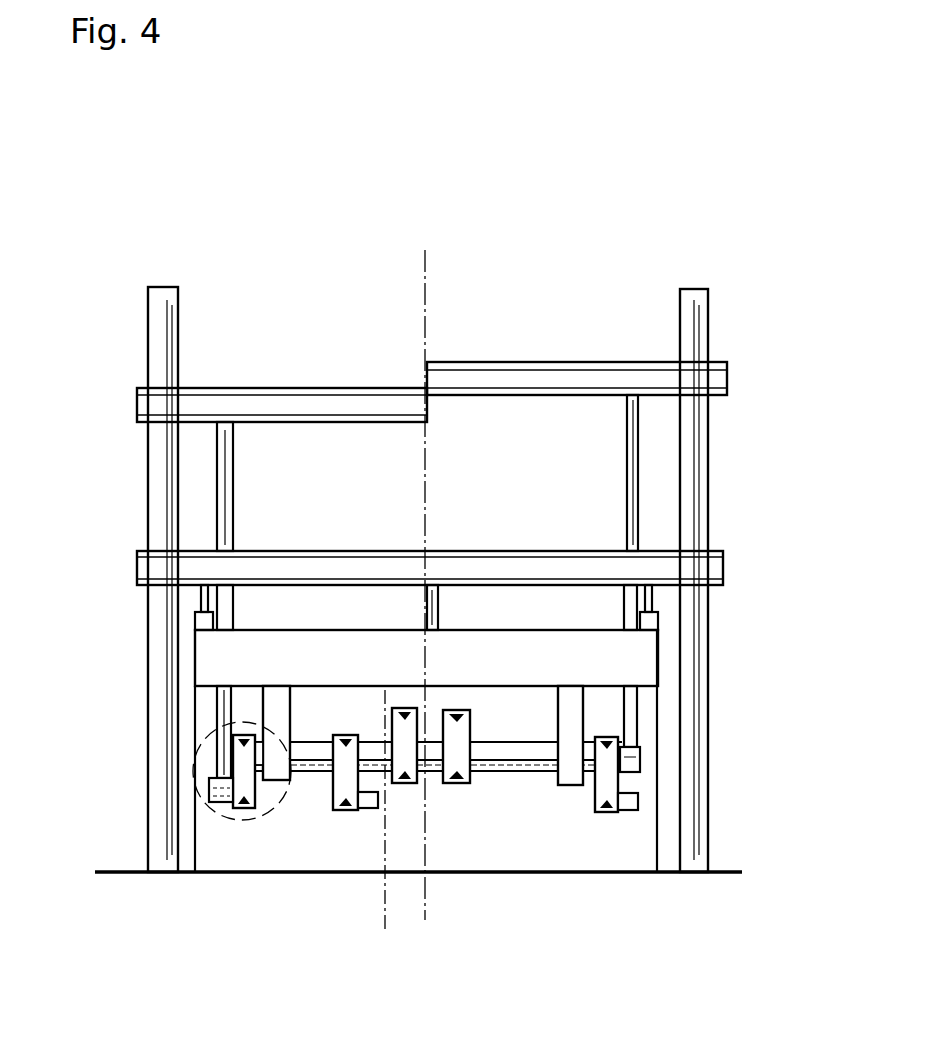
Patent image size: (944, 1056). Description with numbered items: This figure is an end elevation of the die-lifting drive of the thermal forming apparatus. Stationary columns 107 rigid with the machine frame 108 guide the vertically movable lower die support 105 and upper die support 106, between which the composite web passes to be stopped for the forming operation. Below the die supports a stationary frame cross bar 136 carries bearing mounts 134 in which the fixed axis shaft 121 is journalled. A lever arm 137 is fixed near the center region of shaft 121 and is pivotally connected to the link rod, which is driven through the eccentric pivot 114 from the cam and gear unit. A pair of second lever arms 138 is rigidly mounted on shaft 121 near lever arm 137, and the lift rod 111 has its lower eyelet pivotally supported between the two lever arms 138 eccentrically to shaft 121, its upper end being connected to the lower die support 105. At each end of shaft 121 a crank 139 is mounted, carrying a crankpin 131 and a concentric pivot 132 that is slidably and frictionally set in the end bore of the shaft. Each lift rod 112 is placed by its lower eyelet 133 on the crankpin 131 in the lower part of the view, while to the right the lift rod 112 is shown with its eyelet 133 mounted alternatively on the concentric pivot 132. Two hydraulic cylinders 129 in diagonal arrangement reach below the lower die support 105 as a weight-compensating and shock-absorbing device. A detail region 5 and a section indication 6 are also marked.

The detail circle 5 is at (254, 820).
The section line VI-VI 6 is at (350, 697).
The lower die support 105 is at (712, 567).
The upper die support 106 is at (708, 379).
The stationary column 107 is at (690, 489).
The machine frame 108 is at (663, 703).
The lift rod 111 is at (438, 601).
The lift rod 112 is at (217, 453).
The eccentric pivot 114 is at (368, 808).
The fixed axis shaft 121 is at (512, 755).
The hydraulic cylinder 129 is at (195, 615).
The crankpin 131 is at (209, 792).
The concentric pivot 132 is at (722, 779).
The lower eyelet 133 is at (640, 747).
The bearing mount 134 is at (275, 716).
The stationary frame cross bar 136 is at (638, 658).
The lever arm 137 is at (340, 810).
The second lever arm 138 is at (404, 783).
The crank 139 is at (243, 808).